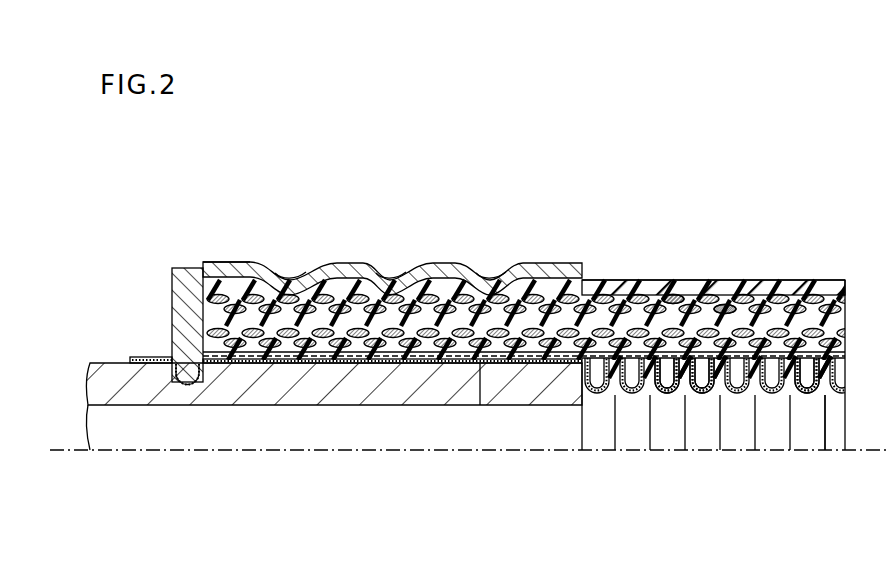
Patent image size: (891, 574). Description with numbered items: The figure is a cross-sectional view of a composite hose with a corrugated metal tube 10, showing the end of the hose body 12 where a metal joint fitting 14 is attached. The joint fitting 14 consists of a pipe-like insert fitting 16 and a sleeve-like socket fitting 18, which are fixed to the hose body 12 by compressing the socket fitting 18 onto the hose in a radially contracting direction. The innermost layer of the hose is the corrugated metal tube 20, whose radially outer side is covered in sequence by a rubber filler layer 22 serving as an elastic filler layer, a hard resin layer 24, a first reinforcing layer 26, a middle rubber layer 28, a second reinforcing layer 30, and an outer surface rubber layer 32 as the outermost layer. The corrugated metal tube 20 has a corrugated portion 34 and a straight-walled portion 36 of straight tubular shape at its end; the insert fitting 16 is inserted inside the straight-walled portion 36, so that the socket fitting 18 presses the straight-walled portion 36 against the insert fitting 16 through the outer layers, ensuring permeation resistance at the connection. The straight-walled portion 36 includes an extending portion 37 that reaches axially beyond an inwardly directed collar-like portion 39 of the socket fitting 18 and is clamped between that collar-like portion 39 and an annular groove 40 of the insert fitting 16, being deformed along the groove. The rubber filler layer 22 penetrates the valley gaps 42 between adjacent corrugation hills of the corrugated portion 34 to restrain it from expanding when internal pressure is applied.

The composite hose with a corrugated metal tube 10 is at (652, 186).
The hose body 12 is at (840, 279).
The metal joint fitting 14 is at (340, 260).
The insert fitting 16 is at (299, 385).
The socket fitting 18 is at (261, 265).
The corrugated metal tube 20 is at (697, 415).
The rubber filler layer 22 is at (793, 392).
The hard resin layer 24 is at (822, 382).
The first reinforcing layer 26 is at (791, 290).
The middle rubber layer 28 is at (757, 327).
The second reinforcing layer 30 is at (696, 297).
The outer surface rubber layer 32 is at (645, 287).
The corrugated portion 34 is at (667, 396).
The straight-walled portion 36 is at (481, 405).
The extending portion 37 is at (143, 357).
The inwardly directed collar-like portion 39 is at (180, 328).
The annular groove 40 is at (196, 378).
The valley gaps 42 is at (704, 397).